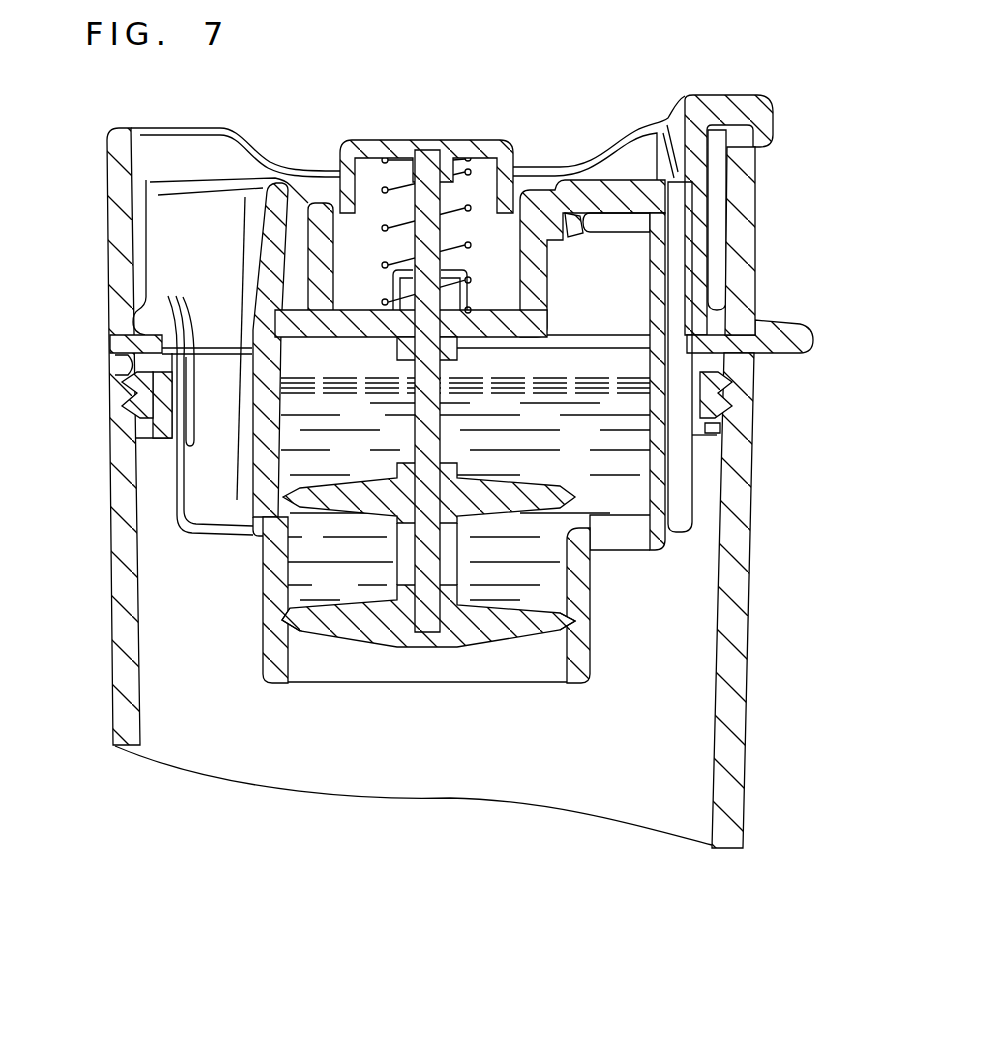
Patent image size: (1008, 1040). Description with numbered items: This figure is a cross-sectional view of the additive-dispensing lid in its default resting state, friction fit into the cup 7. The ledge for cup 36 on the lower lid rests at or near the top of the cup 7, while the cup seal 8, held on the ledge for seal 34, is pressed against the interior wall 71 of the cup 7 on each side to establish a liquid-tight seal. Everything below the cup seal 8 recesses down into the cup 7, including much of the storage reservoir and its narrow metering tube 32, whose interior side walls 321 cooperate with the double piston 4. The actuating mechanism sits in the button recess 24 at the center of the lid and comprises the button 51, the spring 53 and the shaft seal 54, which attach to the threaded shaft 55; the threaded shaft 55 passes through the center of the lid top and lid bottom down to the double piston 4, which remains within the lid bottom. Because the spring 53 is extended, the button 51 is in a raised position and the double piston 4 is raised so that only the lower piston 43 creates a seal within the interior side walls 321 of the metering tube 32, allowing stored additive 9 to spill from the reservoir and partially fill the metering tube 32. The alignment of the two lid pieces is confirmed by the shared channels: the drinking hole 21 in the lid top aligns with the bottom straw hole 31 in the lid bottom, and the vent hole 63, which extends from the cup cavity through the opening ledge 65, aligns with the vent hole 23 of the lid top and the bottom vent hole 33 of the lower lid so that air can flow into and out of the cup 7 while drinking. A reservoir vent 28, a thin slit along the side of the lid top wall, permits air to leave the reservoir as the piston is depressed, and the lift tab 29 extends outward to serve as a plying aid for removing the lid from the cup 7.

The double piston 4 is at (402, 490).
The cup 7 is at (736, 749).
The cup seal 8 is at (143, 391).
The additive 9 is at (570, 518).
The drinking hole 21 is at (188, 253).
The vent hole 23 is at (668, 297).
The button recess 24 is at (338, 222).
The reservoir vent 28 is at (720, 235).
The lift tab 29 is at (800, 335).
The bottom straw hole 31 is at (216, 468).
The metering tube 32 is at (585, 649).
The bottom vent hole 33 is at (668, 445).
The ledge for seal 34 is at (714, 427).
The ledge for cup 36 is at (120, 348).
The lower piston 43 is at (313, 618).
The button 51 is at (382, 140).
The spring 53 is at (467, 162).
The shaft seal 54 is at (457, 273).
The threaded shaft 55 is at (433, 150).
The vent hole 63 is at (670, 124).
The opening ledge 65 is at (770, 133).
The interior wall 71 is at (116, 366).
The interior side walls 321 is at (292, 639).